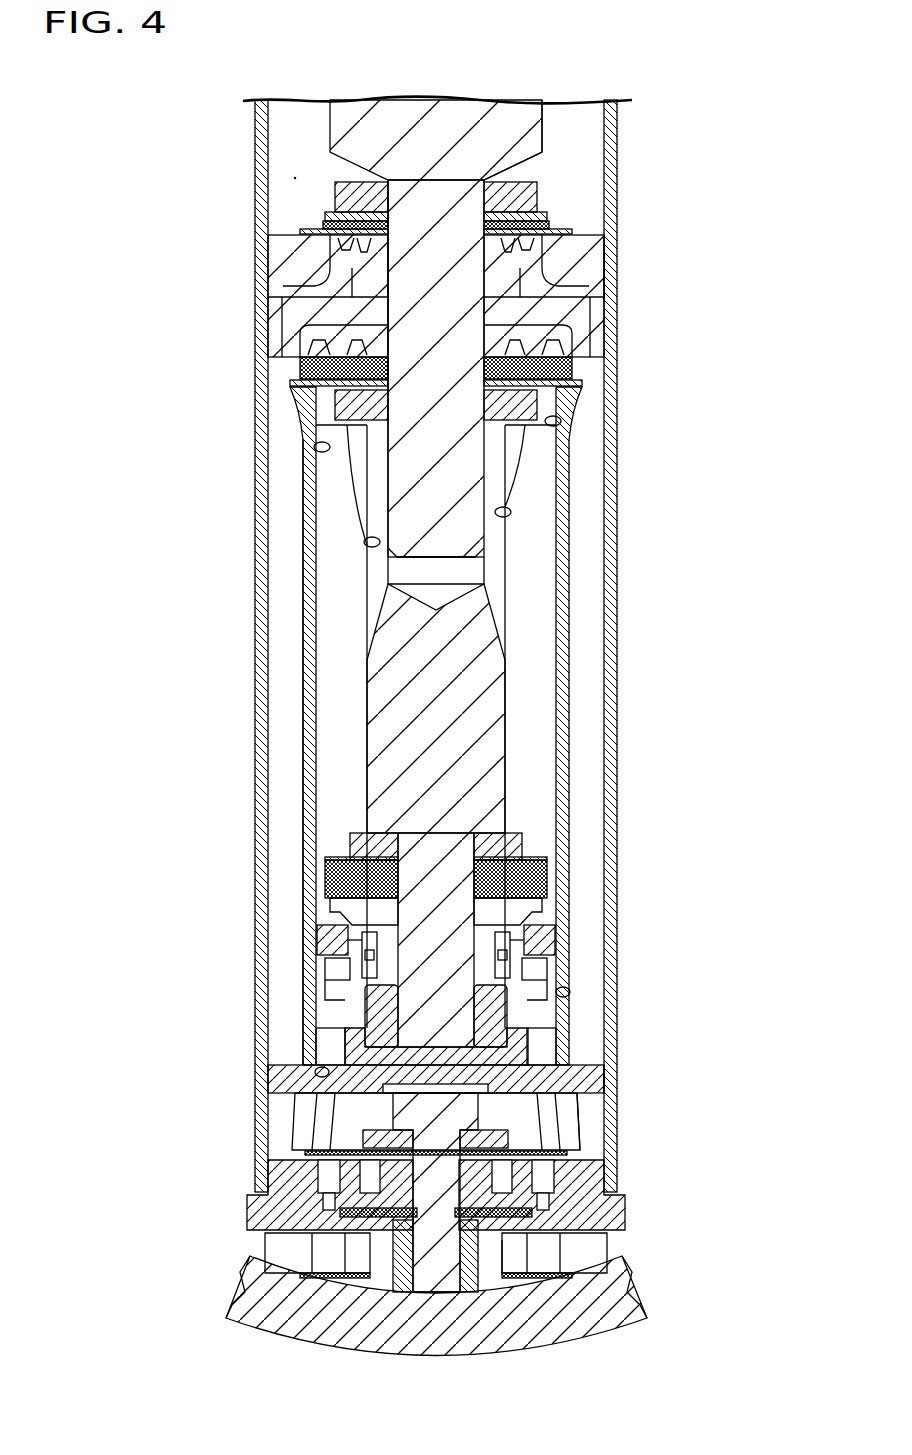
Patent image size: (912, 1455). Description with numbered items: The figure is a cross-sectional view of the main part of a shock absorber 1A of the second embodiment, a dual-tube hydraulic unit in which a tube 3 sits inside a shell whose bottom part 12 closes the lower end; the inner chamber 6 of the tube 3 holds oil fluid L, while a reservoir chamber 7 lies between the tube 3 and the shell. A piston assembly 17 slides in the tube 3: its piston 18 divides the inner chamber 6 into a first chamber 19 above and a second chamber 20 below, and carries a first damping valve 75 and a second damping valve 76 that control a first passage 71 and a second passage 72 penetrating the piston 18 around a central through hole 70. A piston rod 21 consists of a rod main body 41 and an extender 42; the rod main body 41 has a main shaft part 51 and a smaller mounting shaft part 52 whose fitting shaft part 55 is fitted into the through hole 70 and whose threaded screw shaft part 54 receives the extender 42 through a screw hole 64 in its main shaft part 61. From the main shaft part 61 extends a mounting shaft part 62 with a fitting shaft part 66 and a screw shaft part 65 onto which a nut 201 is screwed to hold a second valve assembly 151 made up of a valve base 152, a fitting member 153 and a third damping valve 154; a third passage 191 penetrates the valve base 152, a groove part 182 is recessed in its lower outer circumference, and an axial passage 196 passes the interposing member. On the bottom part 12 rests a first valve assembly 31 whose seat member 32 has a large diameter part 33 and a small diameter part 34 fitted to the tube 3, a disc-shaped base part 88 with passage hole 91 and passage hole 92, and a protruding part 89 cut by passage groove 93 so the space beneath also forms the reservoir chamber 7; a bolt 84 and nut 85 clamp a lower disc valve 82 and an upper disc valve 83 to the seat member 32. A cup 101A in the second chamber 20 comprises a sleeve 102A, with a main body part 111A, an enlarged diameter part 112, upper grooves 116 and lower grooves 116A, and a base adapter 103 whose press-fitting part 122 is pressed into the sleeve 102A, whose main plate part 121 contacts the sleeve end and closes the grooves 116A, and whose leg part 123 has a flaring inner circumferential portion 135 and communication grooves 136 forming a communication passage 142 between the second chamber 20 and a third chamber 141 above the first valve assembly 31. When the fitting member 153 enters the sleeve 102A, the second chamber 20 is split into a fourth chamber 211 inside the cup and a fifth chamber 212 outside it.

The shock absorber 1A is at (702, 80).
The tube 3 is at (610, 122).
The inner chamber 6 is at (282, 122).
The reservoir chamber 7 is at (330, 1290).
The bottom part 12 is at (600, 1298).
The piston assembly 17 is at (609, 268).
The piston 18 is at (283, 252).
The first chamber 19 is at (282, 150).
The second chamber 20 is at (590, 445).
The piston rod 21 is at (543, 128).
The first valve assembly 31 is at (633, 1208).
The seat member 32 is at (540, 1180).
The large diameter part 33 is at (268, 1208).
The small diameter part 34 is at (278, 1178).
The rod main body 41 is at (329, 128).
The extender 42 is at (508, 597).
The main shaft part 51 is at (385, 160).
The mounting shaft part 52 is at (436, 190).
The screw shaft part 54 is at (380, 495).
The fitting shaft part 55 is at (385, 320).
The main shaft part 61 is at (470, 645).
The mounting shaft part 62 is at (437, 855).
The screw hole 64 is at (500, 525).
The screw shaft part 65 is at (365, 1000).
The fitting shaft part 66 is at (350, 900).
The through hole 70 is at (455, 260).
The first passage 71 is at (560, 300).
The second passage 72 is at (300, 270).
The first damping valve 75 is at (576, 368).
The second damping valve 76 is at (297, 221).
The disc valve 82 is at (332, 1212).
The disc valve 83 is at (367, 1110).
The bolt 84 is at (430, 1282).
The nut 85 is at (455, 1283).
The base part 88 is at (575, 1190).
The protruding part 89 is at (520, 1245).
The passage hole 91 is at (343, 1258).
The passage hole 92 is at (535, 1150).
The passage groove 93 is at (560, 1262).
The cup 101A is at (570, 557).
The sleeve 102A is at (303, 640).
The base adapter 103 is at (590, 1045).
The main body part 111A is at (310, 600).
The enlarged diameter part 112 is at (565, 390).
The groove 116 is at (318, 447).
The groove 116A is at (322, 1070).
The main plate part 121 is at (382, 1010).
The press-fitting part 122 is at (490, 1010).
The leg part 123 is at (305, 1146).
The inner circumferential portion 135 is at (607, 1073).
The communication groove 136 is at (560, 1110).
The third chamber 141 is at (365, 1050).
The communication passage 142 is at (350, 1082).
The second valve assembly 151 is at (539, 834).
The valve base 152 is at (548, 880).
The fitting member 153 is at (557, 906).
The third damping valve 154 is at (549, 865).
The groove part 182 is at (345, 940).
The third passage 191 is at (335, 965).
The axial passage 196 is at (335, 995).
The nut 201 is at (525, 940).
The fourth chamber 211 is at (327, 1035).
The fifth chamber 212 is at (338, 715).
The oil fluid L is at (295, 178).